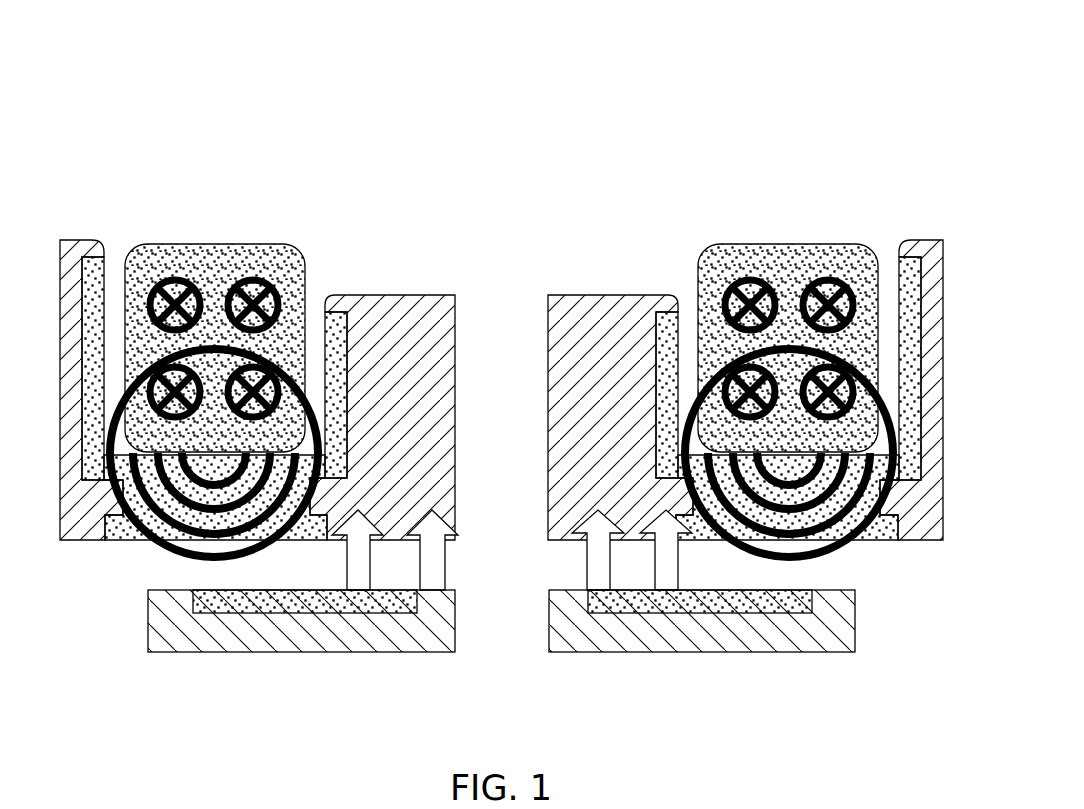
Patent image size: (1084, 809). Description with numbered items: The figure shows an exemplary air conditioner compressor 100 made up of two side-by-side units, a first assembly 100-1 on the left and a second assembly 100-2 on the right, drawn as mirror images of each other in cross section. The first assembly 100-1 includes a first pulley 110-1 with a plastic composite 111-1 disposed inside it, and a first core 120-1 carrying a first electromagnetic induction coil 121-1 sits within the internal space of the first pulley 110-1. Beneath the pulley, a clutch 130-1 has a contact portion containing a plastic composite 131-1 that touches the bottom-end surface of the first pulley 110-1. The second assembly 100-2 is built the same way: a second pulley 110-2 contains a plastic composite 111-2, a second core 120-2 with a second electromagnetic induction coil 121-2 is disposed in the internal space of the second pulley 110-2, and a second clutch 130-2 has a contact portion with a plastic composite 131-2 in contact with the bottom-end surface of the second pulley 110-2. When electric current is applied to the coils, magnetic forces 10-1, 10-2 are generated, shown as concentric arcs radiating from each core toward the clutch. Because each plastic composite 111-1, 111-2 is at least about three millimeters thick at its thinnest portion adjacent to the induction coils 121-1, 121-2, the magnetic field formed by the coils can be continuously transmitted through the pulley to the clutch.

The air conditioner compressor 100 is at (573, 70).
The first assembly 100-1 is at (468, 100).
The second assembly 100-2 is at (628, 154).
The magnetic force 10-1 is at (168, 548).
The magnetic force 10-2 is at (835, 550).
The first pulley 110-1 is at (382, 322).
The second pulley 110-2 is at (618, 322).
The plastic composite 111-1 is at (95, 272).
The plastic composite 111-2 is at (908, 272).
The first core 120-1 is at (257, 257).
The second core 120-2 is at (748, 257).
The first electromagnetic induction coil 121-1 is at (173, 277).
The second electromagnetic induction coil 121-2 is at (828, 273).
The clutch 130-1 is at (378, 640).
The second clutch 130-2 is at (780, 643).
The plastic composite 131-1 is at (237, 605).
The plastic composite 131-2 is at (637, 605).